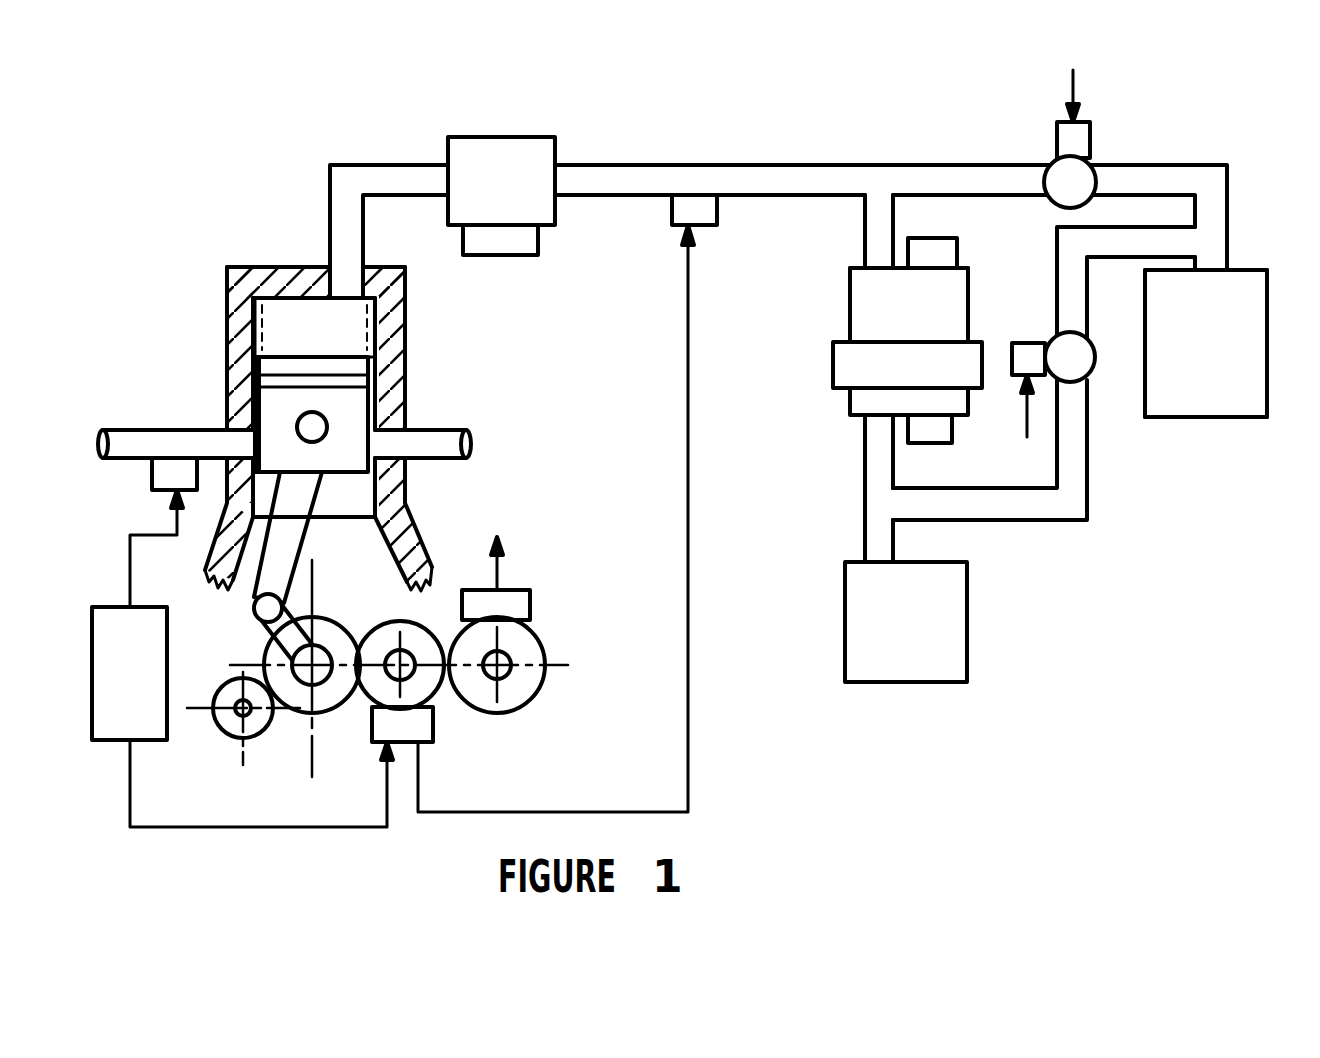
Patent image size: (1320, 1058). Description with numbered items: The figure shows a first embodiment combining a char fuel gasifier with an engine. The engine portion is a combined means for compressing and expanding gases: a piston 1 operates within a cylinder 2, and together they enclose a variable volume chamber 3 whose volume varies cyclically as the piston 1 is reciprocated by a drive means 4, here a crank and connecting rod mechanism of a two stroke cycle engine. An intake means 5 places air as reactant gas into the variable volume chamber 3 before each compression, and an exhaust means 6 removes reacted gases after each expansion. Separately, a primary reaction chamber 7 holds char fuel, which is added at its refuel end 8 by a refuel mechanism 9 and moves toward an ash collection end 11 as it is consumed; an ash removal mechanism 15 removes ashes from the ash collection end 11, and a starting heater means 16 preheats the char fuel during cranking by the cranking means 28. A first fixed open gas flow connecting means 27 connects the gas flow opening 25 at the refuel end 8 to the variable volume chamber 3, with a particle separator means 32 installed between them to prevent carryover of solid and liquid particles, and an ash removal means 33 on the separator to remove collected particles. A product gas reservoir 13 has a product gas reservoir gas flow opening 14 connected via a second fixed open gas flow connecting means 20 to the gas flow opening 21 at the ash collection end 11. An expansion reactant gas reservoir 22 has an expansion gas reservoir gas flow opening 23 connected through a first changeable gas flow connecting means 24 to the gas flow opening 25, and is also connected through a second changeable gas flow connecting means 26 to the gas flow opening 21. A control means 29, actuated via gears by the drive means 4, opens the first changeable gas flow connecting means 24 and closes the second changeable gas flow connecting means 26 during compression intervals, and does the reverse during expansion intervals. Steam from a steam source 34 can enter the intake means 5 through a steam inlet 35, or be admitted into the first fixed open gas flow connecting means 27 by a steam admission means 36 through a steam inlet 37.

The piston 1 is at (282, 405).
The cylinder 2 is at (255, 330).
The variable volume chamber 3 is at (285, 305).
The drive means 4 is at (265, 608).
The intake means 5 is at (148, 437).
The exhaust means 6 is at (432, 440).
The primary reaction chamber 7 is at (893, 320).
The refuel end 8 is at (948, 290).
The refuel mechanism 9 is at (925, 255).
The ash collection end 11 is at (860, 405).
The product gas reservoir 13 is at (885, 612).
The product gas reservoir gas flow opening 14 is at (880, 565).
The ash removal mechanism 15 is at (930, 430).
The starting heater means 16 is at (850, 362).
The second fixed open gas flow connecting means 20 is at (862, 472).
The gas flow opening 21 is at (877, 420).
The expansion reactant gas reservoir 22 is at (1217, 405).
The expansion gas reservoir gas flow opening 23 is at (1205, 288).
The first changeable gas flow connecting means 24 is at (1073, 175).
The gas flow opening 25 is at (877, 267).
The second changeable gas flow connecting means 26 is at (1073, 363).
The first fixed open gas flow connecting means 27 is at (610, 177).
The cranking means 28 is at (237, 725).
The control means 29 is at (508, 688).
The particle separator means 32 is at (488, 152).
The ash removal means 33 is at (488, 235).
The steam source 34 is at (108, 712).
The steam inlet 35 is at (152, 472).
The steam admission means 36 is at (415, 722).
The steam inlet 37 is at (683, 210).